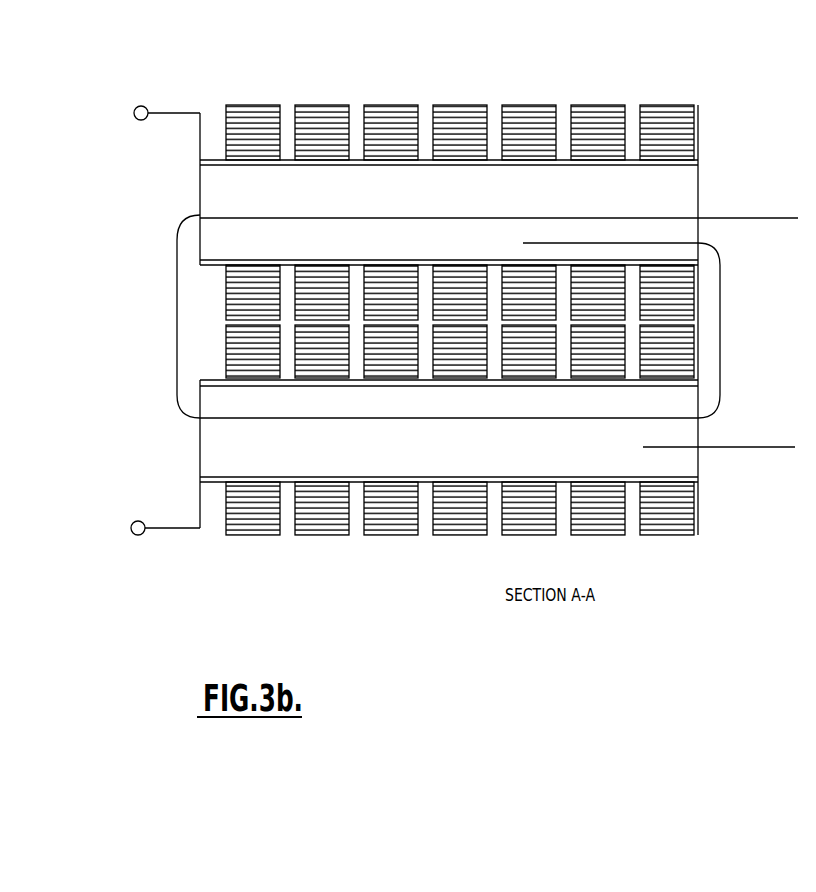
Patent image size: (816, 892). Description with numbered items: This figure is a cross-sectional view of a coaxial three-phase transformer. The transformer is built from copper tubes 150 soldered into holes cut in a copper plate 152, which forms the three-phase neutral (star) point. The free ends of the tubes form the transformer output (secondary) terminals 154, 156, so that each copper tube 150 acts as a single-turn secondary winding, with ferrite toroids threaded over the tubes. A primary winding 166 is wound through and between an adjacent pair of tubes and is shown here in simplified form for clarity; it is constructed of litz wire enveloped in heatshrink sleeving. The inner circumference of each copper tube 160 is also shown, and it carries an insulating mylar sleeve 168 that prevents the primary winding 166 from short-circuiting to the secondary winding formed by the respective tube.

The copper tube 150 is at (207, 205).
The copper plate 152 is at (698, 465).
The transformer output terminal 154 is at (141, 106).
The transformer output terminal 156 is at (138, 535).
The copper tube 160 is at (453, 104).
The primary winding 166 is at (745, 219).
The insulating sleeve 168 is at (200, 383).